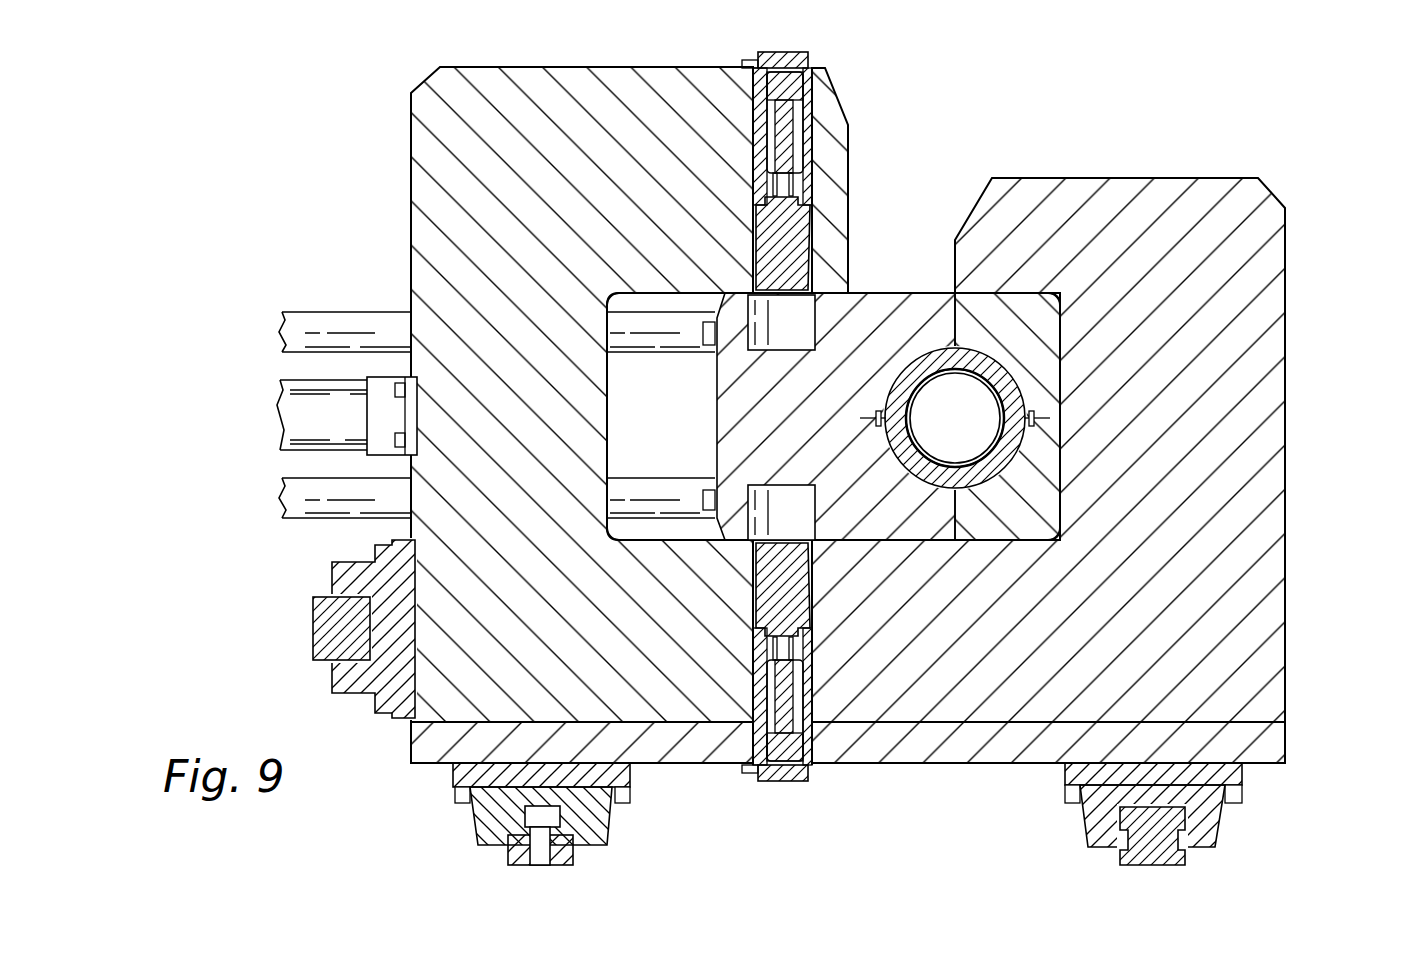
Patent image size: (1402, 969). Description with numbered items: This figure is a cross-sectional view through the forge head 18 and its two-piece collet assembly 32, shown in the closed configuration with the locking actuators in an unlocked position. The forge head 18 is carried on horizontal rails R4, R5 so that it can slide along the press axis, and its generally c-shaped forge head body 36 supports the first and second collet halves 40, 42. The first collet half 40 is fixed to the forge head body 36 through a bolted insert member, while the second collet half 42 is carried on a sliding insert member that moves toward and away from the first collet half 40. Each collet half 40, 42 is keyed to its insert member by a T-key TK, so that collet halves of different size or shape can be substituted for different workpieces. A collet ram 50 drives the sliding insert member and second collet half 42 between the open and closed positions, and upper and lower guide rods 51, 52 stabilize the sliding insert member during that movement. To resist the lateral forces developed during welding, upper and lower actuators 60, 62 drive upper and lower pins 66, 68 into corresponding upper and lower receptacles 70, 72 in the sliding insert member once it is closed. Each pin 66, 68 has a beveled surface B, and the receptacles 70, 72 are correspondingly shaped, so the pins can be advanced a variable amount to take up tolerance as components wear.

The forge head 18 is at (1250, 465).
The two-piece collet assembly 32 is at (940, 288).
The forge head body 36 is at (1167, 228).
The first collet half 40 is at (995, 360).
The second collet half 42 is at (940, 360).
The collet ram 50 is at (320, 412).
The upper guide rod 51 is at (330, 320).
The lower guide rod 52 is at (320, 505).
The upper actuator 60 is at (783, 90).
The lower actuator 62 is at (782, 755).
The upper pin 66 is at (773, 243).
The lower pin 68 is at (763, 600).
The upper receptacle 70 is at (780, 322).
The lower receptacle 72 is at (790, 505).
The beveled surface B is at (820, 275).
The T-key TK is at (1036, 420).
The horizontal rail R4 is at (1155, 840).
The horizontal rail R5 is at (520, 835).